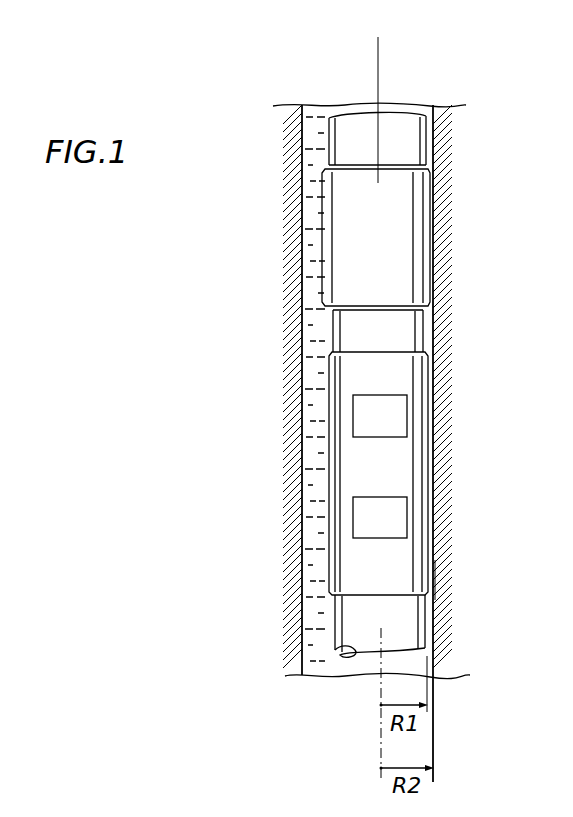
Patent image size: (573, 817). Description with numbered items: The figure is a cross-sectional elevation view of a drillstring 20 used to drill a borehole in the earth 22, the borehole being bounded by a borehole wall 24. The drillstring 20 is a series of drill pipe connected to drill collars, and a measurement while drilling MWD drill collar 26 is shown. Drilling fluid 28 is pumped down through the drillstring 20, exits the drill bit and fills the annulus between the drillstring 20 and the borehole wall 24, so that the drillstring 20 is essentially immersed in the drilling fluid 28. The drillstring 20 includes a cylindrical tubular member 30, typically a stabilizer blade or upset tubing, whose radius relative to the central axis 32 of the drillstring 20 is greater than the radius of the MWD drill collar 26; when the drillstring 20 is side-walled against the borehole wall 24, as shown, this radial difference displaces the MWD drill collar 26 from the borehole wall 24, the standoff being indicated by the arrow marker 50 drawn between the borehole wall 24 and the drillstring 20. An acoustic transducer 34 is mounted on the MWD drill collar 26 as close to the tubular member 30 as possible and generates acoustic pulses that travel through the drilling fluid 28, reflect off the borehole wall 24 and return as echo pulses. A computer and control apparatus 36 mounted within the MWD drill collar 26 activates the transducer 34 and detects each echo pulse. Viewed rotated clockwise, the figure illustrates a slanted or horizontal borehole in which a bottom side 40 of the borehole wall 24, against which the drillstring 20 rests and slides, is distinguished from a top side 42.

The drillstring 20 is at (433, 137).
The earth 22 is at (287, 197).
The borehole wall 24 is at (312, 113).
The MWD drill collar 26 is at (393, 530).
The drilling fluid 28 is at (320, 149).
The tubular member 30 is at (392, 259).
The central axis 32 is at (380, 53).
The acoustic transducer 34 is at (426, 473).
The computer and control apparatus 36 is at (393, 428).
The bottom side 40 is at (447, 578).
The top side 42 is at (303, 596).
The fluid flow direction 50 is at (322, 468).